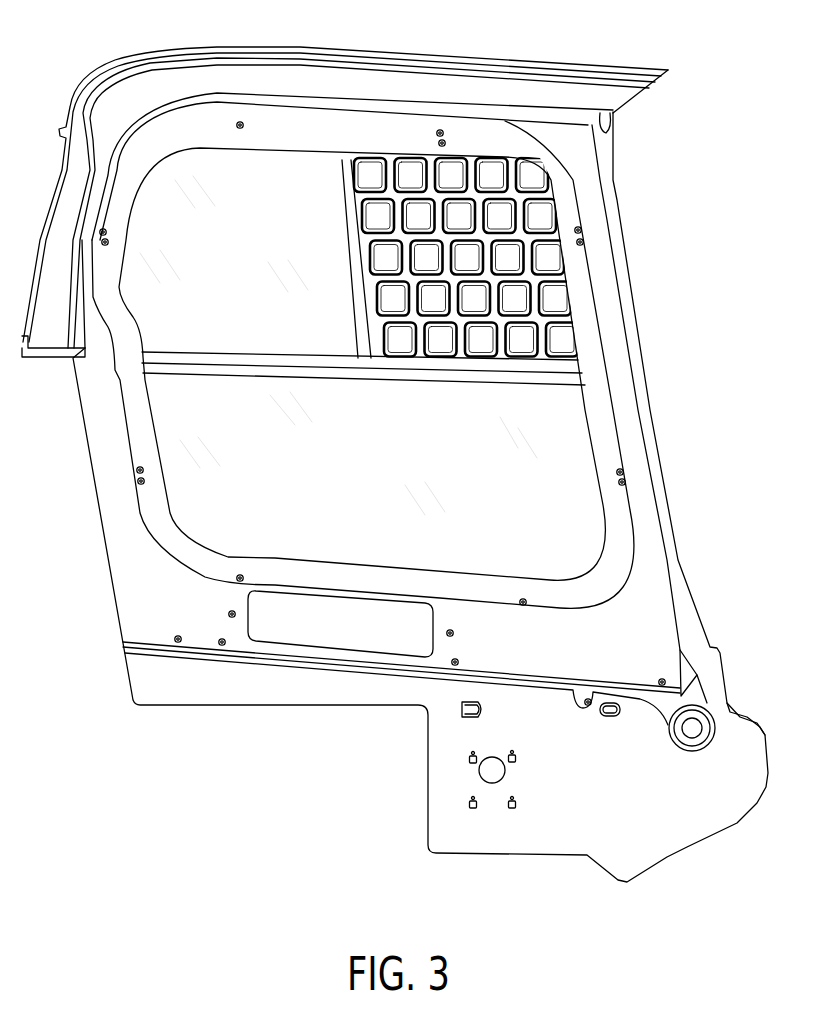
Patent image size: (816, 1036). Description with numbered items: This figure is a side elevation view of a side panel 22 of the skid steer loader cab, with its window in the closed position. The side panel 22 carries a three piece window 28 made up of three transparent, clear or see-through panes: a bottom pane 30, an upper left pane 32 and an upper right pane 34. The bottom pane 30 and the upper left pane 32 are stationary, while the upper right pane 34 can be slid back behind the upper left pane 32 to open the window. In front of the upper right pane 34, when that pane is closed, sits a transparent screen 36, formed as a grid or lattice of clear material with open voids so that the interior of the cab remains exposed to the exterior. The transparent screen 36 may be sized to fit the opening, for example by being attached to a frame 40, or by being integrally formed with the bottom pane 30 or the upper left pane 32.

The side panel 22 is at (665, 196).
The three piece window 28 is at (118, 380).
The bottom pane 30 is at (382, 478).
The upper left pane 32 is at (247, 264).
The upper right pane 34 is at (487, 173).
The transparent screen 36 is at (550, 325).
The frame 40 is at (607, 457).